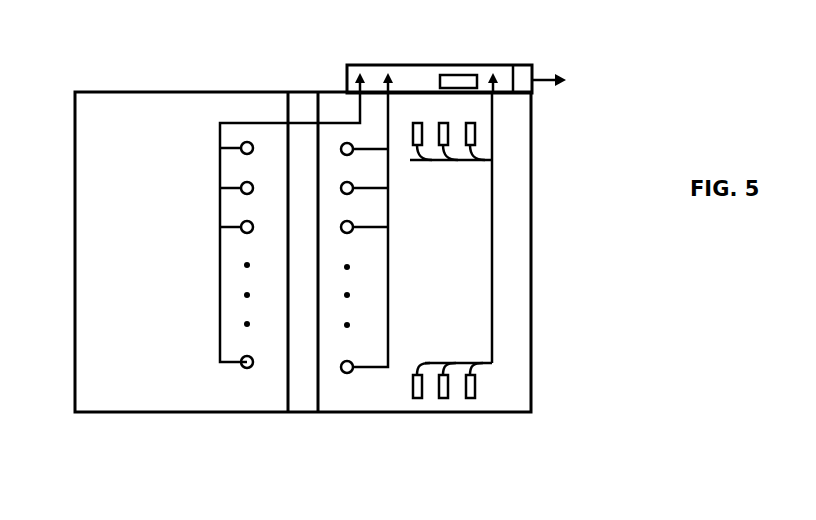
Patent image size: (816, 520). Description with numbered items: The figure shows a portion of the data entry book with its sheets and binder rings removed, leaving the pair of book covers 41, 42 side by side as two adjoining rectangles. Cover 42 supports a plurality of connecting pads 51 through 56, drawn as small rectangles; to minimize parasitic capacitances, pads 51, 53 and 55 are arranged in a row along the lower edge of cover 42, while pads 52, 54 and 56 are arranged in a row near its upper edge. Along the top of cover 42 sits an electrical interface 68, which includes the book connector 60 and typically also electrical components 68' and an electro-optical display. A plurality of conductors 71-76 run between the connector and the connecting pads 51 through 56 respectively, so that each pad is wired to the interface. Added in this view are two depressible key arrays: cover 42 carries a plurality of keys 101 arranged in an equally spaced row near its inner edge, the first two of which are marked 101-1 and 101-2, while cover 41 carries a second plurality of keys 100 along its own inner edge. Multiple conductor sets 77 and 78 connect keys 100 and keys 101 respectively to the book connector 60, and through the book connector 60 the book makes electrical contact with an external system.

The book cover 41 is at (75, 270).
The book cover 42 is at (531, 297).
The electrical interface 68 is at (439, 53).
The electrical components 68' is at (472, 58).
The book connector 60 is at (518, 65).
The conductor set 77 is at (220, 136).
The depressible key array 100 is at (243, 358).
The conductor set 78 is at (388, 255).
The first depressible key 101-1 is at (344, 144).
The second depressible key 101-2 is at (341, 188).
The depressible keys 101 is at (345, 240).
The conductors 71-76 is at (490, 205).
The connecting pad 51 is at (413, 388).
The connecting pad 52 is at (415, 127).
The connecting pad 53 is at (444, 398).
The connecting pad 54 is at (446, 123).
The connecting pad 55 is at (476, 395).
The connecting pad 56 is at (470, 123).